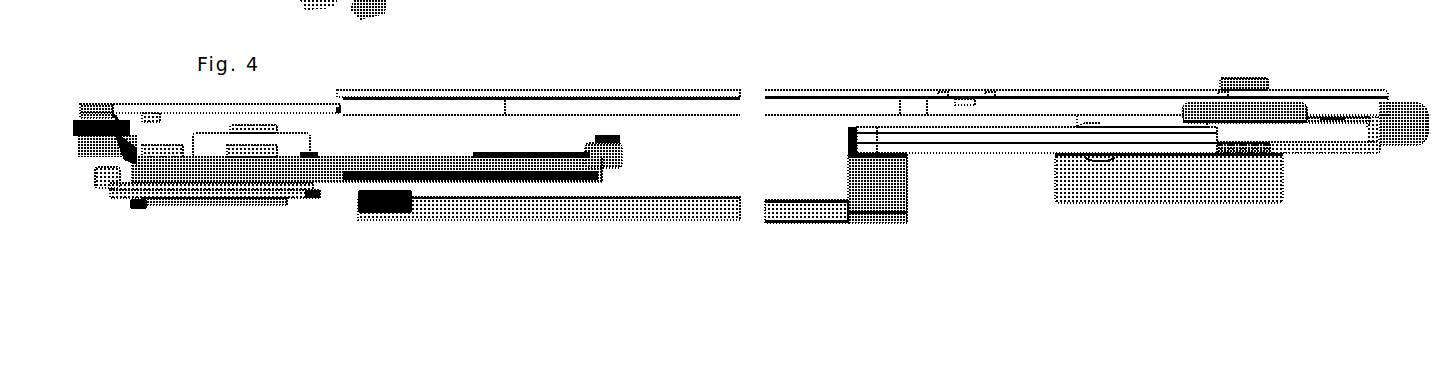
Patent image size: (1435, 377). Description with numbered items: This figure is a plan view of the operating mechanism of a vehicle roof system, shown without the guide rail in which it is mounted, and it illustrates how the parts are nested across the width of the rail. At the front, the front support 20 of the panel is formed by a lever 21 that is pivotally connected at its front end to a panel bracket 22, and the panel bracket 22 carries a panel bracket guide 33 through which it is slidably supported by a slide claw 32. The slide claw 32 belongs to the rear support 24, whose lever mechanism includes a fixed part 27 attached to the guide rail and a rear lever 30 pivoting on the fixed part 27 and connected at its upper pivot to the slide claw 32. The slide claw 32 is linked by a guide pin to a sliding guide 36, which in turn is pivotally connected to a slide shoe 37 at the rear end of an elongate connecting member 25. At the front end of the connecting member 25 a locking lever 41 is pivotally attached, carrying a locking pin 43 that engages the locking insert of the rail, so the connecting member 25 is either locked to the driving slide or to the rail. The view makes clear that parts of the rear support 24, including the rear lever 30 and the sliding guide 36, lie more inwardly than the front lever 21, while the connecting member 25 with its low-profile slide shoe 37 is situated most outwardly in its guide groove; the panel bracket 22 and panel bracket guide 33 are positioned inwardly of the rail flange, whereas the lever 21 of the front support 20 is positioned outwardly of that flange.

The front support 20 is at (553, 78).
The lever 21 is at (503, 165).
The panel bracket 22 is at (398, 105).
The rear support 24 is at (1042, 78).
The connecting member 25 is at (583, 213).
The fixed part 27 is at (1253, 182).
The lever 30 is at (1337, 121).
The slide claw 32 is at (1290, 115).
The panel bracket guide 33 is at (1083, 112).
The sliding guide 36 is at (925, 125).
The slide shoe 37 is at (898, 183).
The locking lever 41 is at (305, 195).
The locking pin 43 is at (132, 207).